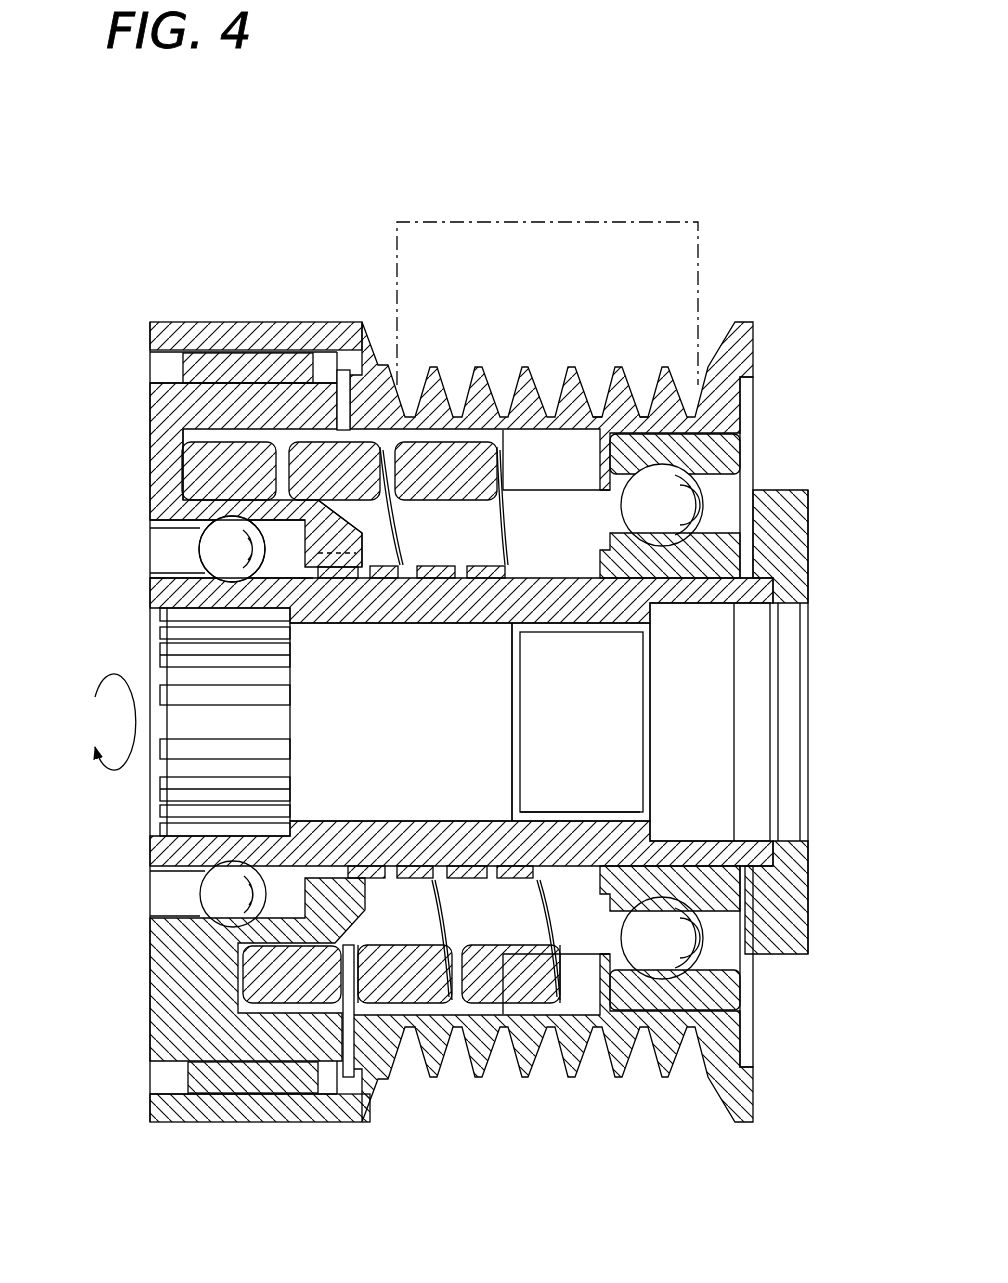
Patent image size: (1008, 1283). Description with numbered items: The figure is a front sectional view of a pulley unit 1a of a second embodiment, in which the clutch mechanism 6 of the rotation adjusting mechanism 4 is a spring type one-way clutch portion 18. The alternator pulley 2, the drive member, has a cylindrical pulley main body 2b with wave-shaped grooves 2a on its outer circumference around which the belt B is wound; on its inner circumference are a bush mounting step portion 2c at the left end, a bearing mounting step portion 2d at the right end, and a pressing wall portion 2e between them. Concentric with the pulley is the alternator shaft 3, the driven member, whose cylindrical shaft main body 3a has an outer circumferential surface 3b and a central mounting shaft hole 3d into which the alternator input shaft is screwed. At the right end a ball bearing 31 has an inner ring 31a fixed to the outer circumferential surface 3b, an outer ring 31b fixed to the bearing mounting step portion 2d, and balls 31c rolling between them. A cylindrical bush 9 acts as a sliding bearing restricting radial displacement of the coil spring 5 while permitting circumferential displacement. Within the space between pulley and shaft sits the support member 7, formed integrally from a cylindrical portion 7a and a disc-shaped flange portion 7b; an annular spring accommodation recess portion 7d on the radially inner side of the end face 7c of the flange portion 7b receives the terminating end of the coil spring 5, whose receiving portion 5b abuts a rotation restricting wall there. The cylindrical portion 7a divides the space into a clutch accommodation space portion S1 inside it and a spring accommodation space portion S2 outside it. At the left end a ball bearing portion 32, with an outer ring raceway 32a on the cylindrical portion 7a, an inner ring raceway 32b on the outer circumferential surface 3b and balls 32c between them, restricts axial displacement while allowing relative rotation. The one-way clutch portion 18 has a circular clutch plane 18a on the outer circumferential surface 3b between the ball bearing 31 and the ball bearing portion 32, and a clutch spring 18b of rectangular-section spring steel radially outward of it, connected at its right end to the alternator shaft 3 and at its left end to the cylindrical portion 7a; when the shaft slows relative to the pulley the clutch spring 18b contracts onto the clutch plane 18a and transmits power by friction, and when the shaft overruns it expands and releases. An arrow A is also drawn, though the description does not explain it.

The pulley unit 1a is at (352, 211).
The alternator pulley 2 is at (285, 345).
The wave-shaped grooves 2a is at (641, 405).
The pulley main body 2b is at (600, 412).
The bush mounting step portion 2c is at (240, 360).
The bearing mounting step portion 2d is at (737, 440).
The pressing wall portion 2e is at (543, 457).
The alternator shaft 3 is at (777, 595).
The shaft main body 3a is at (573, 603).
The outer circumferential surface 3b is at (735, 568).
The mounting shaft hole 3d is at (580, 812).
The rotation adjusting mechanism 4 is at (146, 948).
The coil spring 5 is at (330, 1018).
The receiving portion 5b is at (205, 479).
The clutch mechanism 6 is at (468, 905).
The support member 7 is at (146, 458).
The cylindrical portion 7a is at (320, 518).
The flange portion 7b is at (180, 395).
The end face 7c is at (343, 405).
The spring accommodation recess portion 7d is at (178, 435).
The bush 9 is at (262, 1092).
The spring type one-way clutch portion 18 is at (496, 940).
The clutch plane 18a is at (382, 970).
The clutch spring 18b is at (482, 875).
The ball bearing 31 is at (742, 714).
The inner ring 31a is at (703, 542).
The outer ring 31b is at (713, 459).
The balls 31c is at (698, 512).
The ball bearing portion 32 is at (185, 557).
The outer ring raceway 32a is at (210, 547).
The inner ring raceway 32b is at (200, 585).
The balls 32c is at (215, 568).
The rotation direction A is at (110, 722).
The belt B is at (700, 253).
The clutch accommodation space portion S1 is at (506, 898).
The spring accommodation space portion S2 is at (430, 428).